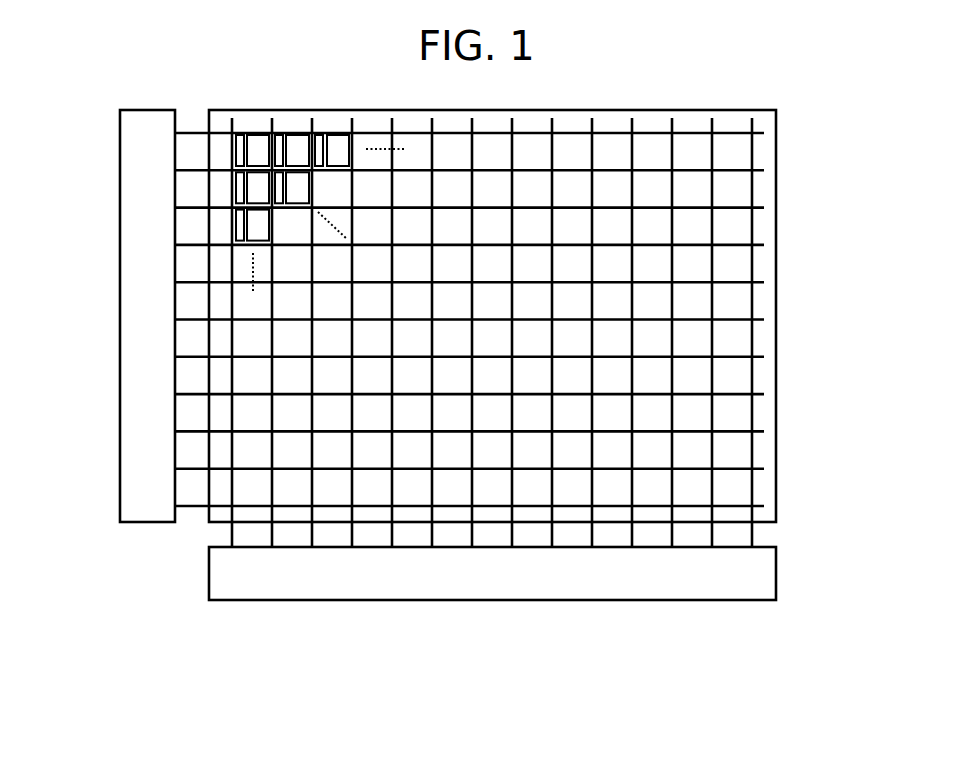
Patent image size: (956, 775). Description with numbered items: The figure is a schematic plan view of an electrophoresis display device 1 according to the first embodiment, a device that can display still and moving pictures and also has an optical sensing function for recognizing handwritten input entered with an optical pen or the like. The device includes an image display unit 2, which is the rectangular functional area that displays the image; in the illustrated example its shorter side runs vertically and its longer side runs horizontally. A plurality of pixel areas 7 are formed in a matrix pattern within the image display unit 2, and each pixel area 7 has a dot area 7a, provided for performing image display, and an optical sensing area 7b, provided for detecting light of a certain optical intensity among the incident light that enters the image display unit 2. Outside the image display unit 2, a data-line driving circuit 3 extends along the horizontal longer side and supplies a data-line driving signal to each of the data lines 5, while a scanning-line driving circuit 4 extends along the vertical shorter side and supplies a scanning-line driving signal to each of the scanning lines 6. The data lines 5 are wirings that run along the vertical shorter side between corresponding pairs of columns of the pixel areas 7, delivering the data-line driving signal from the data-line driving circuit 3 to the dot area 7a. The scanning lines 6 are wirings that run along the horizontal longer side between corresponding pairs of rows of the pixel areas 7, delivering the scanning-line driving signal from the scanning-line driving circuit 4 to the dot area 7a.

The electrophoresis display device 1 is at (778, 77).
The image display unit 2 is at (776, 148).
The data-line driving circuit 3 is at (767, 573).
The scanning-line driving circuit 4 is at (125, 295).
The data lines 5 is at (597, 148).
The scanning lines 6 is at (732, 283).
The pixel areas 7 is at (212, 53).
The dot area 7a is at (259, 135).
The optical sensing area 7b is at (243, 135).